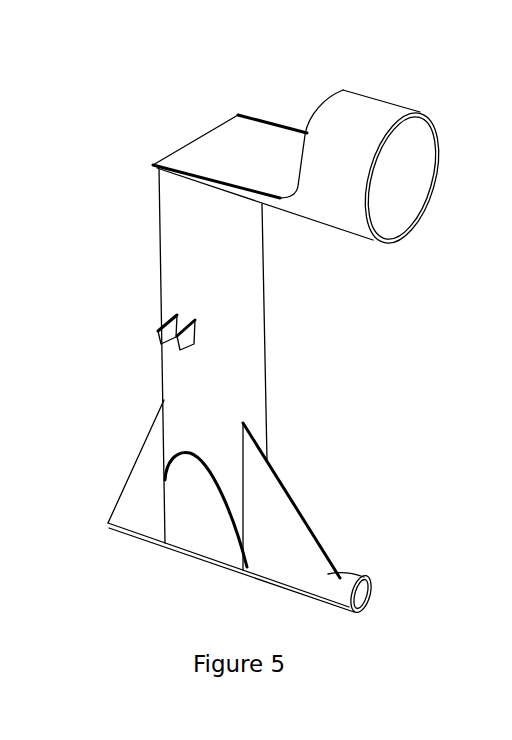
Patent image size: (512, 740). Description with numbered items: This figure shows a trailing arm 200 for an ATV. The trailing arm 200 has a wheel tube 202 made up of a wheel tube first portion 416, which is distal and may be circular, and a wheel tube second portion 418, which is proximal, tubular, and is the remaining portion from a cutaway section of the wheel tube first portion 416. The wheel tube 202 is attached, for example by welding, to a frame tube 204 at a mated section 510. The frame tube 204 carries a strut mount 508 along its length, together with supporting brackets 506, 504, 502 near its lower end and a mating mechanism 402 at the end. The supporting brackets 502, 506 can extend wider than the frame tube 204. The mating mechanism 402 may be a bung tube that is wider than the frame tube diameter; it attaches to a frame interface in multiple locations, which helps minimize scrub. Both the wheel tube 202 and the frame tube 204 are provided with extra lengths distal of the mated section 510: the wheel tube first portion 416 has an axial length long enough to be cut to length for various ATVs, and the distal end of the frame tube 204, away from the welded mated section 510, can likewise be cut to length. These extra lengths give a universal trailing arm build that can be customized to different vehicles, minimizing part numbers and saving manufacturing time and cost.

The trailing arm 200 is at (268, 60).
The wheel tube 202 is at (434, 97).
The frame tube 204 is at (297, 385).
The mating mechanism 402 is at (358, 577).
The wheel tube first portion 416 is at (344, 209).
The wheel tube second portion 418 is at (280, 127).
The supporting bracket 502 is at (268, 552).
The supporting bracket 504 is at (185, 533).
The supporting bracket 506 is at (132, 502).
The strut mount 508 is at (160, 328).
The mated section 510 is at (152, 164).